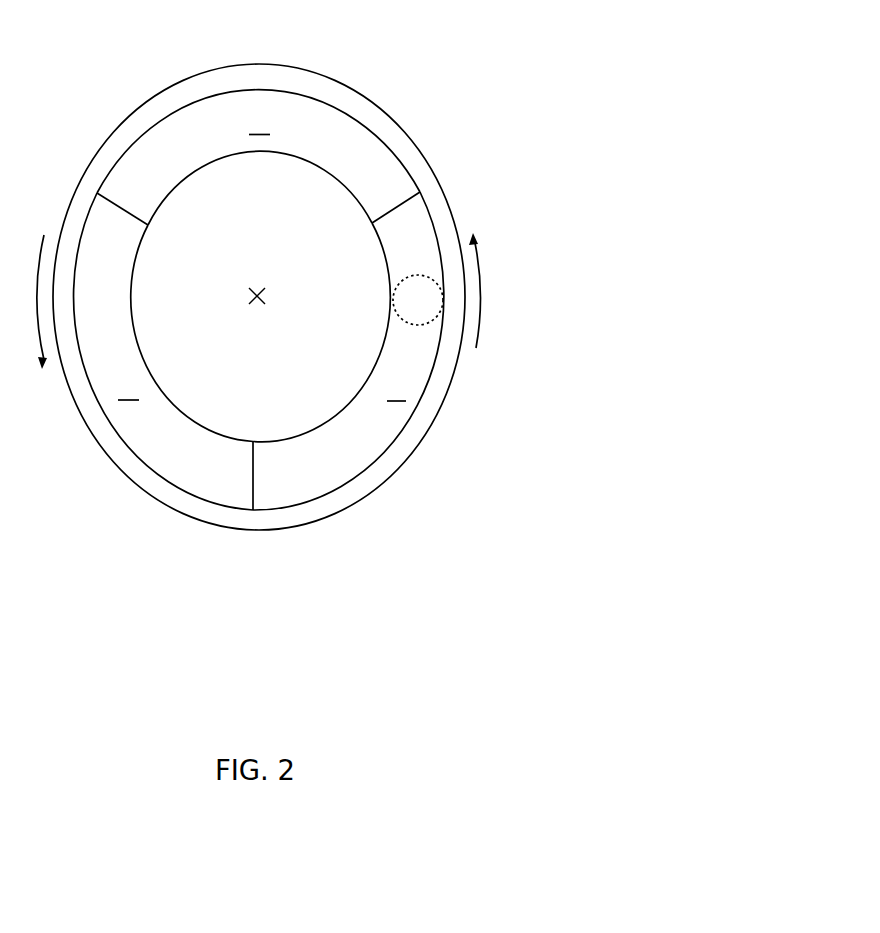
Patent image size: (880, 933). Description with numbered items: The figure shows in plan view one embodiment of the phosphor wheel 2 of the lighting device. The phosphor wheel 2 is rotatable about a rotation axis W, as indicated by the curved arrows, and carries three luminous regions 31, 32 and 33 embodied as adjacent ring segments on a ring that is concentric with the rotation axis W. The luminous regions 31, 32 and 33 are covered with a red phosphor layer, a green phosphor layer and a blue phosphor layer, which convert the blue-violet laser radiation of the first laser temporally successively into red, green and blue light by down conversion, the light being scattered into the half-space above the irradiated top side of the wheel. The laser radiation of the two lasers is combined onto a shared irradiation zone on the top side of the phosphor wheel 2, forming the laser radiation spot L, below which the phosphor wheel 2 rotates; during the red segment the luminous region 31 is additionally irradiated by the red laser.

The phosphor wheel 2 is at (410, 94).
The luminous region 31 is at (427, 232).
The luminous region 32 is at (173, 160).
The luminous region 33 is at (198, 478).
The rotation axis W is at (267, 295).
The laser radiation spot L is at (418, 305).